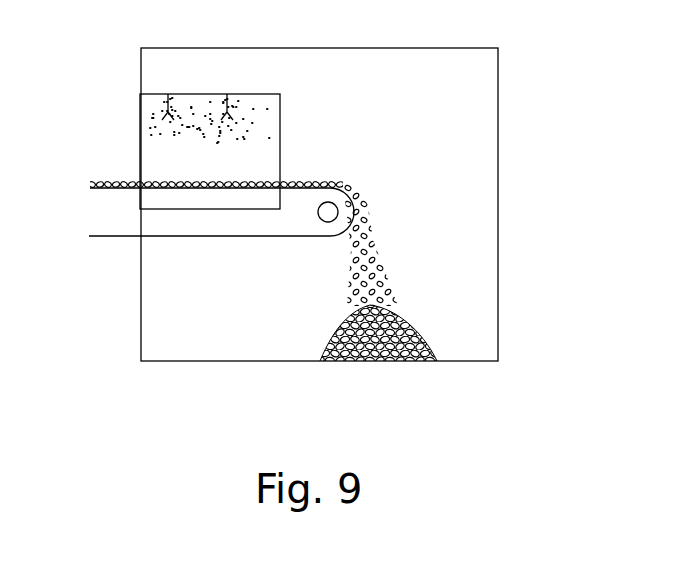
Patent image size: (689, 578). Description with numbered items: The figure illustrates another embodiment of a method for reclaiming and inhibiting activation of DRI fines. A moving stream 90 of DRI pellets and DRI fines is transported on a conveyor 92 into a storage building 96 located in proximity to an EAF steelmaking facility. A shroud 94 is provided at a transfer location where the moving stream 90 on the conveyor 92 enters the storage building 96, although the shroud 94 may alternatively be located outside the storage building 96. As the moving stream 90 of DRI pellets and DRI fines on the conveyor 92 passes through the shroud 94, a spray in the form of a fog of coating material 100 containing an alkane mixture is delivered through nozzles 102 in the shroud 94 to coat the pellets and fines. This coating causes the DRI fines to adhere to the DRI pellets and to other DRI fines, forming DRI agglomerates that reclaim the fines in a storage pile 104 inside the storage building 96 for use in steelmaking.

The moving stream 90 is at (100, 180).
The conveyor 92 is at (123, 190).
The shroud 94 is at (245, 93).
The storage building 96 is at (498, 127).
The coating material 100 is at (205, 117).
The nozzles 102 is at (168, 109).
The storage pile 104 is at (428, 340).